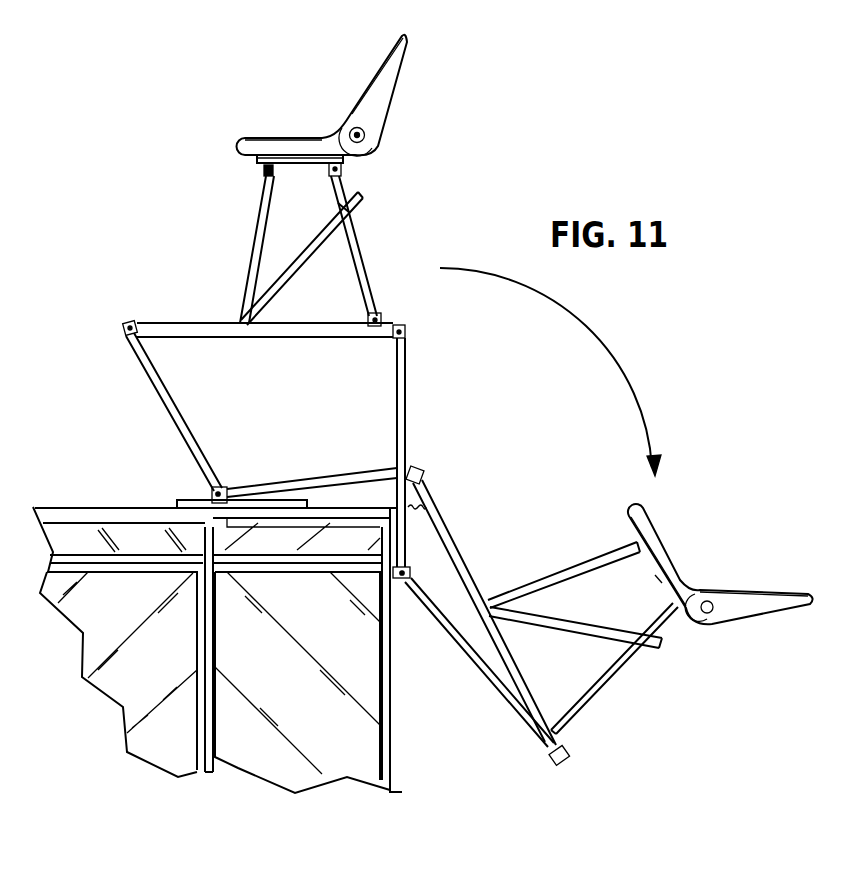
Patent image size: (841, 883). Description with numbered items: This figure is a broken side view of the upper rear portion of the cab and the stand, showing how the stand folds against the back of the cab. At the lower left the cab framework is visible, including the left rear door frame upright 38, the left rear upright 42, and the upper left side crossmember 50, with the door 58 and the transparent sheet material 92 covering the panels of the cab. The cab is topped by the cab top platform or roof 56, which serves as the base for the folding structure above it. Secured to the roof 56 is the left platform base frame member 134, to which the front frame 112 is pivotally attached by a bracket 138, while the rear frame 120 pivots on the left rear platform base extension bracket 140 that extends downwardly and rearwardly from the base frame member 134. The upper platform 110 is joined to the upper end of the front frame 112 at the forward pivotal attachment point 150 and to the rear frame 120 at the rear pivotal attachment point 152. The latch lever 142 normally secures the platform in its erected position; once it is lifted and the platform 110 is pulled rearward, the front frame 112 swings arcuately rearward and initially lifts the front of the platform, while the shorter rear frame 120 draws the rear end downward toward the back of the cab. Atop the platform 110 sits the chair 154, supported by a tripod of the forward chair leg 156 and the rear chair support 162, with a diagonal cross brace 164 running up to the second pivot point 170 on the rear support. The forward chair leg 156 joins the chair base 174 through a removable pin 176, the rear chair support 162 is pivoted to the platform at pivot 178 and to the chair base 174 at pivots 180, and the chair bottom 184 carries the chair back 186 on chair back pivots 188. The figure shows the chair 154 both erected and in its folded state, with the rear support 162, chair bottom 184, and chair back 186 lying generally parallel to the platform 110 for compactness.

The left rear door frame upright 38 is at (214, 648).
The left rear upright 42 is at (381, 640).
The upper left side crossmember 50 is at (312, 568).
The cab top platform or roof 56 is at (108, 507).
The door 58 is at (155, 573).
The transparent sheet material 92 is at (160, 680).
The upper platform 110 is at (365, 337).
The front frame 112 is at (268, 480).
The rear frame 120 is at (407, 541).
The left platform base frame member 134 is at (307, 518).
The bracket 138 is at (207, 492).
The left rear platform base extension bracket 140 is at (403, 580).
The latch lever 142 is at (426, 507).
The forward upper platform pivotal attachment point 150 is at (122, 328).
The rear upper platform pivotal attachment point 152 is at (407, 332).
The chair 154 is at (315, 118).
The forward chair leg 156 is at (258, 225).
The rear chair support 162 is at (362, 240).
The diagonal cross brace 164 is at (335, 226).
The second pivot point 170 is at (343, 232).
The chair base 174 is at (326, 170).
The removable pin 176 is at (265, 171).
The pivot 178 is at (380, 313).
The pivots 180 is at (345, 168).
The chair bottom 184 is at (253, 138).
The chair back 186 is at (397, 90).
The chair back pivots 188 is at (365, 134).